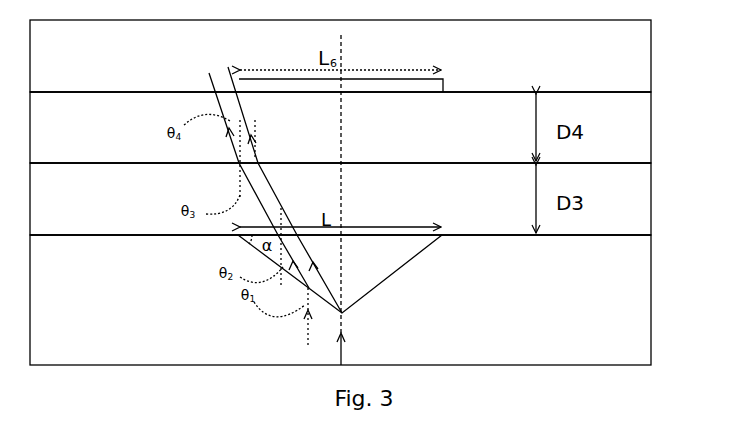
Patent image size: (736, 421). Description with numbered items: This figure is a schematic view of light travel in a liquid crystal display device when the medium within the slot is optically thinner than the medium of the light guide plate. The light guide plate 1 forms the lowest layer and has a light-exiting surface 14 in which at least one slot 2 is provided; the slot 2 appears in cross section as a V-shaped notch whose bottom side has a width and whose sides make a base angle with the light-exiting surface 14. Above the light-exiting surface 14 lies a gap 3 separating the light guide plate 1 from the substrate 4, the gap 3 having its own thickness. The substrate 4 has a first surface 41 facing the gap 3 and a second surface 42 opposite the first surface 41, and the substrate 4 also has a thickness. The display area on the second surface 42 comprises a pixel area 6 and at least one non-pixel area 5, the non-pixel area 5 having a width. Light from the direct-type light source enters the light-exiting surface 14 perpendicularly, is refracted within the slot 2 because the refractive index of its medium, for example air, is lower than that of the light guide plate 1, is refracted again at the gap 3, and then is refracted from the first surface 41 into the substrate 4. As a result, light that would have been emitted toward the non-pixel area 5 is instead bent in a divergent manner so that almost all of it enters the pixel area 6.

The light guide plate 1 is at (340, 300).
The slot 2 is at (340, 274).
The gap 3 is at (340, 199).
The substrate 4 is at (340, 127).
The non-pixel area 5 is at (374, 92).
The pixel area 6 is at (340, 56).
The light-exiting surface 14 is at (630, 235).
The first surface 41 is at (630, 163).
The second surface 42 is at (630, 92).